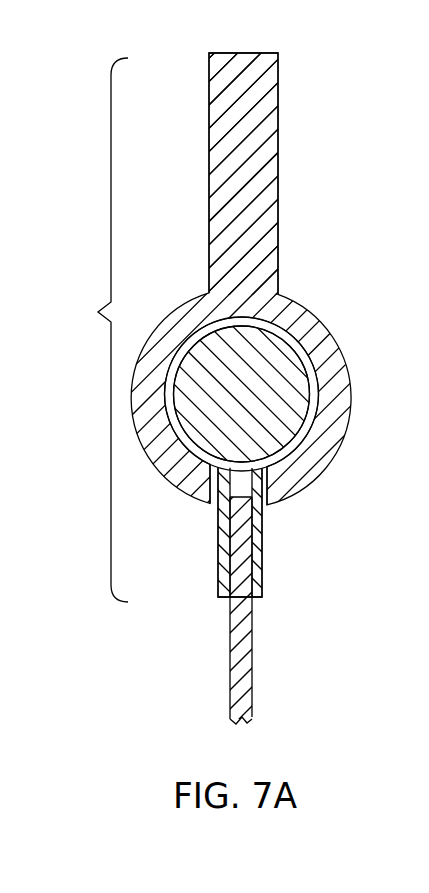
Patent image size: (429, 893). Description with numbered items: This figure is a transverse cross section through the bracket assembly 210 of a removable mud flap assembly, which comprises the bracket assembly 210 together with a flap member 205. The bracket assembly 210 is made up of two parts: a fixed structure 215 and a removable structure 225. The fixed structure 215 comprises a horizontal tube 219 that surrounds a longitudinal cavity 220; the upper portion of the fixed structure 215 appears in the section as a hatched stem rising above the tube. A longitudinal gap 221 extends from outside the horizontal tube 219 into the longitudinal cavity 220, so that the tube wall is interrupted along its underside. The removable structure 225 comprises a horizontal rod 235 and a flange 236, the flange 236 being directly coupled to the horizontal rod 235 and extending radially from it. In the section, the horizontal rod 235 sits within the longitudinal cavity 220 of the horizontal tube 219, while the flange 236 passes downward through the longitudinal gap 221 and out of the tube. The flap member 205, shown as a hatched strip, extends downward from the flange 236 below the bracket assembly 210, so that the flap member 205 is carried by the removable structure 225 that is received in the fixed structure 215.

The bracket assembly 210 is at (91, 330).
The fixed structure 215 is at (278, 267).
The horizontal tube 219 is at (352, 397).
The longitudinal cavity 220 is at (315, 375).
The longitudinal gap 221 is at (265, 507).
The horizontal rod 235 is at (212, 468).
The removable structure 225 is at (268, 539).
The flange 236 is at (263, 590).
The flap member 205 is at (252, 657).